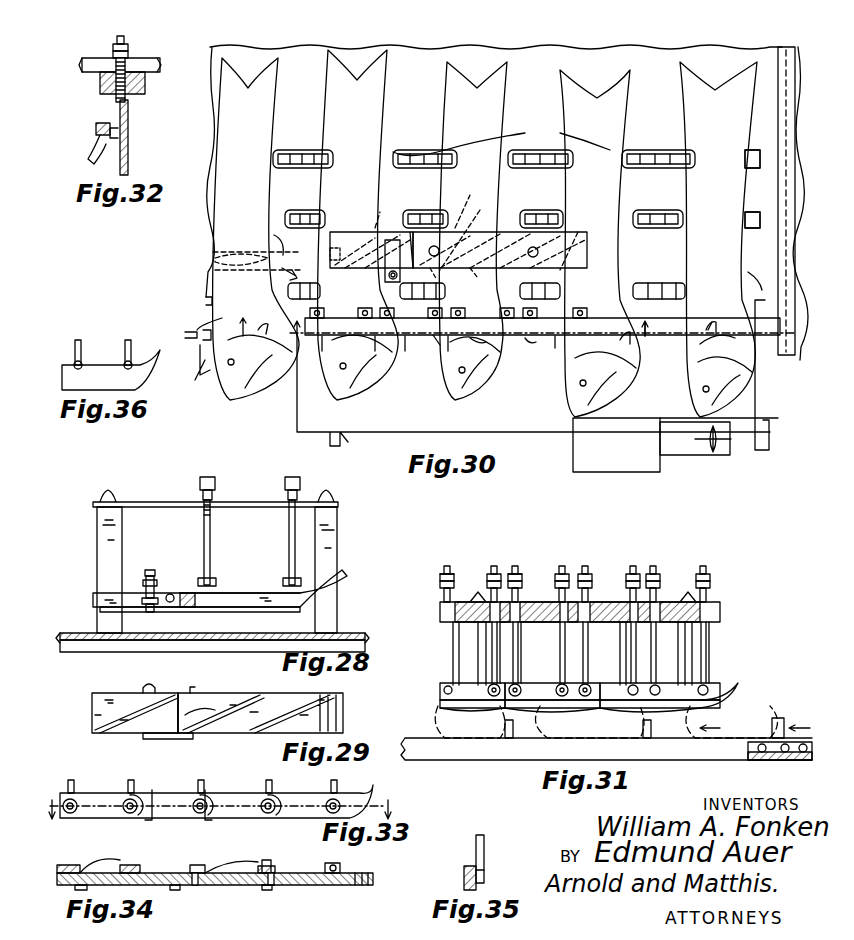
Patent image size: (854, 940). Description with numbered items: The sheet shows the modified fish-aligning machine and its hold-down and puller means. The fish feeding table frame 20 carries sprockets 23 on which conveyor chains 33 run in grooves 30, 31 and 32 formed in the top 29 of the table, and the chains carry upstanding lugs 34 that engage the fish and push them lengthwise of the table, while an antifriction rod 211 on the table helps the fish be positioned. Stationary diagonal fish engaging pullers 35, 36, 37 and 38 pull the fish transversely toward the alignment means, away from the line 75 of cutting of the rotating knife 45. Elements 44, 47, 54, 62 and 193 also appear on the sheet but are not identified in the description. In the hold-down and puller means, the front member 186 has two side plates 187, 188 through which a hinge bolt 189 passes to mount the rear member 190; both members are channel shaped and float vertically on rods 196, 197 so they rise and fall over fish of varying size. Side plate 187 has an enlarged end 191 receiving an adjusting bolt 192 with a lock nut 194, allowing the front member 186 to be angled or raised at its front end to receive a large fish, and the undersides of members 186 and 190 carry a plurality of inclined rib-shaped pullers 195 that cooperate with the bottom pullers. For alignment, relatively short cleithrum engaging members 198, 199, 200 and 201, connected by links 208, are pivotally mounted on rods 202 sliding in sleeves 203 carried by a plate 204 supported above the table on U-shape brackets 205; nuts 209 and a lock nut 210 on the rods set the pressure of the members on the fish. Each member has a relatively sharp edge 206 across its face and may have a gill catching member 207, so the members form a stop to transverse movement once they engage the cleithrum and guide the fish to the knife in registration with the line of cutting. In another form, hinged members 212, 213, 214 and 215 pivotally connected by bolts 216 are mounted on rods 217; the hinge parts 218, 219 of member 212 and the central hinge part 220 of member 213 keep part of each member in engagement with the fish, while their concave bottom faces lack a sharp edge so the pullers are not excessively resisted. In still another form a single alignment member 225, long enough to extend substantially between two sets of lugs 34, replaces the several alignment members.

In FIG. 30, the fish feeding table frame 20 is at (704, 42).
In FIG. 30, the sprockets 23 is at (698, 232).
In FIG. 30, the table top 29 is at (637, 50).
In FIG. 28, the table top 29 is at (100, 612).
In FIG. 30, the groove 30 is at (282, 269).
In FIG. 30, the groove 31 is at (307, 203).
In FIG. 30, the groove 32 is at (309, 142).
In FIG. 31, the groove 32 is at (684, 562).
In FIG. 30, the conveyor chains 33 is at (555, 208).
In FIG. 31, the conveyor chains 33 is at (778, 756).
In FIG. 30, the lugs 34 is at (530, 138).
In FIG. 31, the lugs 34 is at (508, 740).
In FIG. 33, the lugs 34 is at (383, 797).
In FIG. 30, the diagonal fish engaging puller 35 is at (578, 228).
In FIG. 33, the diagonal fish engaging puller 35 is at (152, 790).
In FIG. 30, the diagonal fish engaging puller 36 is at (468, 197).
In FIG. 30, the diagonal fish engaging puller 37 is at (370, 217).
In FIG. 30, the diagonal fish engaging puller 38 is at (226, 250).
In FIG. 30, the holder 44 is at (210, 322).
In FIG. 30, the knife 45 is at (195, 332).
In FIG. 30, the hook 47 is at (265, 320).
In FIG. 30, the stop 54 is at (274, 236).
In FIG. 30, the side frame 62 is at (797, 290).
In FIG. 30, the line of cutting 75 is at (715, 326).
In FIG. 30, the front member 186 is at (575, 254).
In FIG. 28, the front member 186 is at (250, 595).
In FIG. 29, the front member 186 is at (263, 700).
In FIG. 28, the side plate 187 is at (195, 592).
In FIG. 29, the side plate 187 is at (195, 687).
In FIG. 30, the side plate 188 is at (416, 230).
In FIG. 29, the side plate 188 is at (143, 738).
In FIG. 28, the hinge bolt 189 is at (172, 594).
In FIG. 30, the rear member 190 is at (345, 227).
In FIG. 28, the rear member 190 is at (93, 594).
In FIG. 29, the rear member 190 is at (92, 706).
In FIG. 28, the enlarged end 191 is at (153, 608).
In FIG. 29, the enlarged end 191 is at (143, 686).
In FIG. 30, the adjusting bolt 192 is at (388, 276).
In FIG. 28, the adjusting bolt 192 is at (150, 570).
In FIG. 30, the nut 193 is at (385, 258).
In FIG. 28, the nut 193 is at (142, 590).
In FIG. 28, the lock nut 194 is at (157, 580).
In FIG. 30, the inclined rib-shaped pullers 195 is at (455, 272).
In FIG. 28, the inclined rib-shaped pullers 195 is at (250, 610).
In FIG. 29, the inclined rib-shaped pullers 195 is at (205, 714).
In FIG. 30, the rod 196 is at (533, 248).
In FIG. 28, the rod 196 is at (292, 534).
In FIG. 30, the rod 197 is at (436, 248).
In FIG. 28, the rod 197 is at (210, 542).
In FIG. 32, the cleithrum engaging member 198 is at (120, 150).
In FIG. 30, the cleithrum engaging member 198 is at (555, 348).
In FIG. 31, the cleithrum engaging member 198 is at (688, 690).
In FIG. 30, the cleithrum engaging member 199 is at (448, 352).
In FIG. 31, the cleithrum engaging member 199 is at (610, 686).
In FIG. 30, the cleithrum engaging member 200 is at (440, 335).
In FIG. 31, the cleithrum engaging member 200 is at (537, 686).
In FIG. 30, the cleithrum engaging member 201 is at (340, 352).
In FIG. 31, the cleithrum engaging member 201 is at (470, 688).
In FIG. 32, the rods 202 is at (129, 102).
In FIG. 30, the rods 202 is at (386, 308).
In FIG. 31, the rods 202 is at (589, 642).
In FIG. 32, the sleeves 203 is at (116, 96).
In FIG. 31, the sleeves 203 is at (610, 600).
In FIG. 32, the plate 204 is at (100, 80).
In FIG. 31, the plate 204 is at (518, 642).
In FIG. 32, the U-shape brackets 205 is at (148, 56).
In FIG. 31, the U-shape brackets 205 is at (466, 642).
In FIG. 32, the sharp edge 206 is at (98, 163).
In FIG. 32, the gill catching member 207 is at (100, 125).
In FIG. 30, the gill catching member 207 is at (482, 338).
In FIG. 30, the links 208 is at (528, 336).
In FIG. 31, the links 208 is at (575, 698).
In FIG. 32, the nuts 209 is at (114, 46).
In FIG. 31, the nuts 209 is at (502, 578).
In FIG. 32, the lock nut 210 is at (116, 58).
In FIG. 31, the lock nut 210 is at (475, 562).
In FIG. 30, the antifriction rod 211 is at (400, 345).
In FIG. 33, the hinged member 212 is at (330, 786).
In FIG. 34, the hinged member 212 is at (325, 868).
In FIG. 33, the hinged member 213 is at (266, 788).
In FIG. 34, the hinged member 213 is at (258, 868).
In FIG. 33, the hinged member 214 is at (200, 777).
In FIG. 34, the hinged member 214 is at (190, 868).
In FIG. 35, the hinged member 214 is at (464, 878).
In FIG. 33, the hinged member 215 is at (108, 812).
In FIG. 34, the hinged member 215 is at (135, 858).
In FIG. 33, the bolts 216 is at (262, 814).
In FIG. 34, the bolts 216 is at (135, 859).
In FIG. 33, the rods 217 is at (128, 787).
In FIG. 34, the rods 217 is at (325, 865).
In FIG. 35, the rods 217 is at (484, 857).
In FIG. 34, the hinge part 218 is at (278, 880).
In FIG. 34, the hinge part 219 is at (272, 886).
In FIG. 34, the central hinge part 220 is at (258, 888).
In FIG. 36, the single alignment member 225 is at (98, 375).